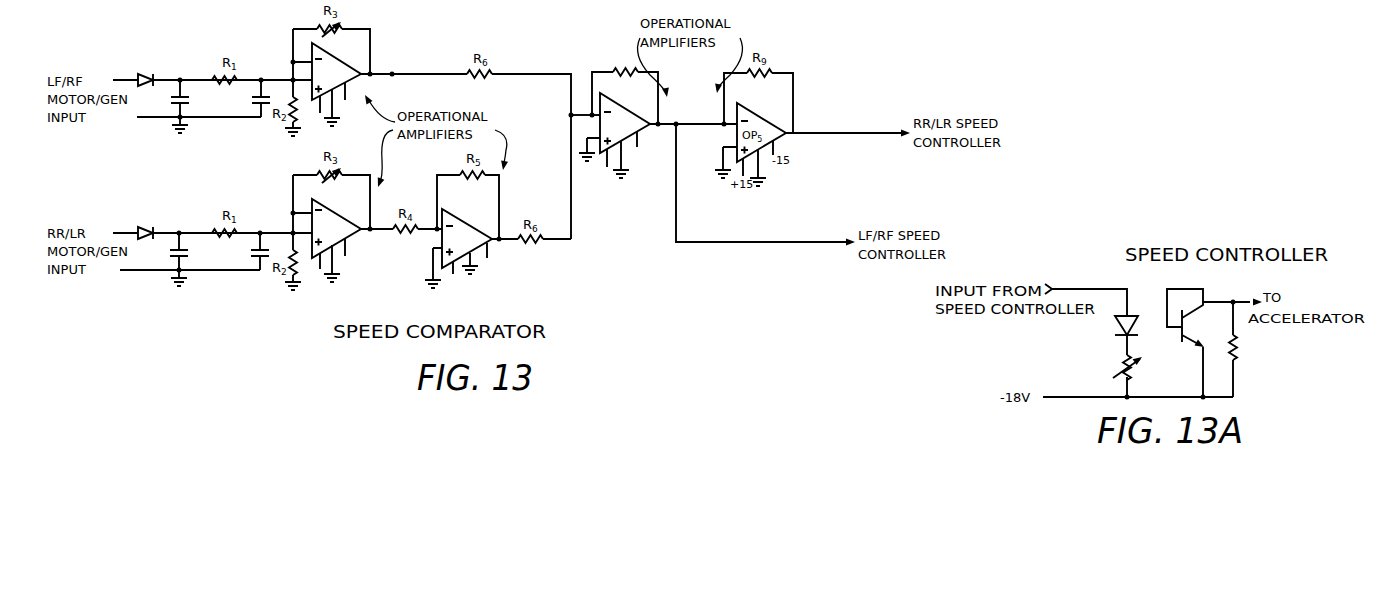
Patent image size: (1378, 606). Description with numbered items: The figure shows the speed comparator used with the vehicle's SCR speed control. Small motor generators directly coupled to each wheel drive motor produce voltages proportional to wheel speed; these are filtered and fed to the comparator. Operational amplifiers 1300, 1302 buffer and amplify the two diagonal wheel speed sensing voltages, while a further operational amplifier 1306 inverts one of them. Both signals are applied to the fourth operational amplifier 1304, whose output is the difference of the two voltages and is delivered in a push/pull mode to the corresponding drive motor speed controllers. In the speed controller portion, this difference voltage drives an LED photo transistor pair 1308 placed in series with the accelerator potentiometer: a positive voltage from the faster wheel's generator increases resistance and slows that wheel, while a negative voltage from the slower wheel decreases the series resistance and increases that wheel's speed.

In FIG. 13, the operational amplifier 1300 is at (352, 63).
In FIG. 13, the operational amplifier 1302 is at (310, 203).
In FIG. 13, the OP AMP 4 1304 is at (612, 63).
In FIG. 13, the operational amplifier 1306 is at (478, 227).
In FIG. 13A, the LED photo transistor pair 1308 is at (1205, 290).